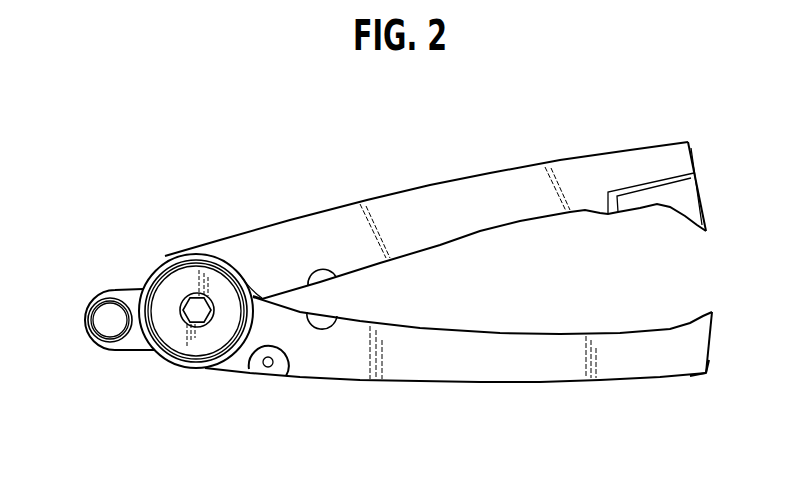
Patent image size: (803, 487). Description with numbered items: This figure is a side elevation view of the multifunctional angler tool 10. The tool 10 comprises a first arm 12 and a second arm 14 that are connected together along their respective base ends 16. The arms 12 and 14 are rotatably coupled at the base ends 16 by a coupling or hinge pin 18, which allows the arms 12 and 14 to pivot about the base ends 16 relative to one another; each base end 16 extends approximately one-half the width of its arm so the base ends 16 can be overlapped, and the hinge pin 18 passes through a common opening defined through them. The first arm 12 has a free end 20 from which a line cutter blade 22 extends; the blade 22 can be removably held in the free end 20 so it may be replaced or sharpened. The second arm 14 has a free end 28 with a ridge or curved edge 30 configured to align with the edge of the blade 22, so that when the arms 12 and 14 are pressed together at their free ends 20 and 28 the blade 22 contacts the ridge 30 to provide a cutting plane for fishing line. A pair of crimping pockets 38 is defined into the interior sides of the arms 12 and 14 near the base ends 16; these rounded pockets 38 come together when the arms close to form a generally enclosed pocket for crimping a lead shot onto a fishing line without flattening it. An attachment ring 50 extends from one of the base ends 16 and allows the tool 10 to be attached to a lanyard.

The tool 10 is at (240, 163).
The first arm 12 is at (437, 183).
The second arm 14 is at (477, 385).
The base ends 16 is at (161, 364).
The hinge pin 18 is at (167, 295).
The free end 20 is at (692, 136).
The line cutter blade 22 is at (678, 197).
The free end 28 is at (708, 379).
The ridge 30 is at (703, 316).
The crimping pockets 38 is at (327, 283).
The attachment ring 50 is at (81, 320).